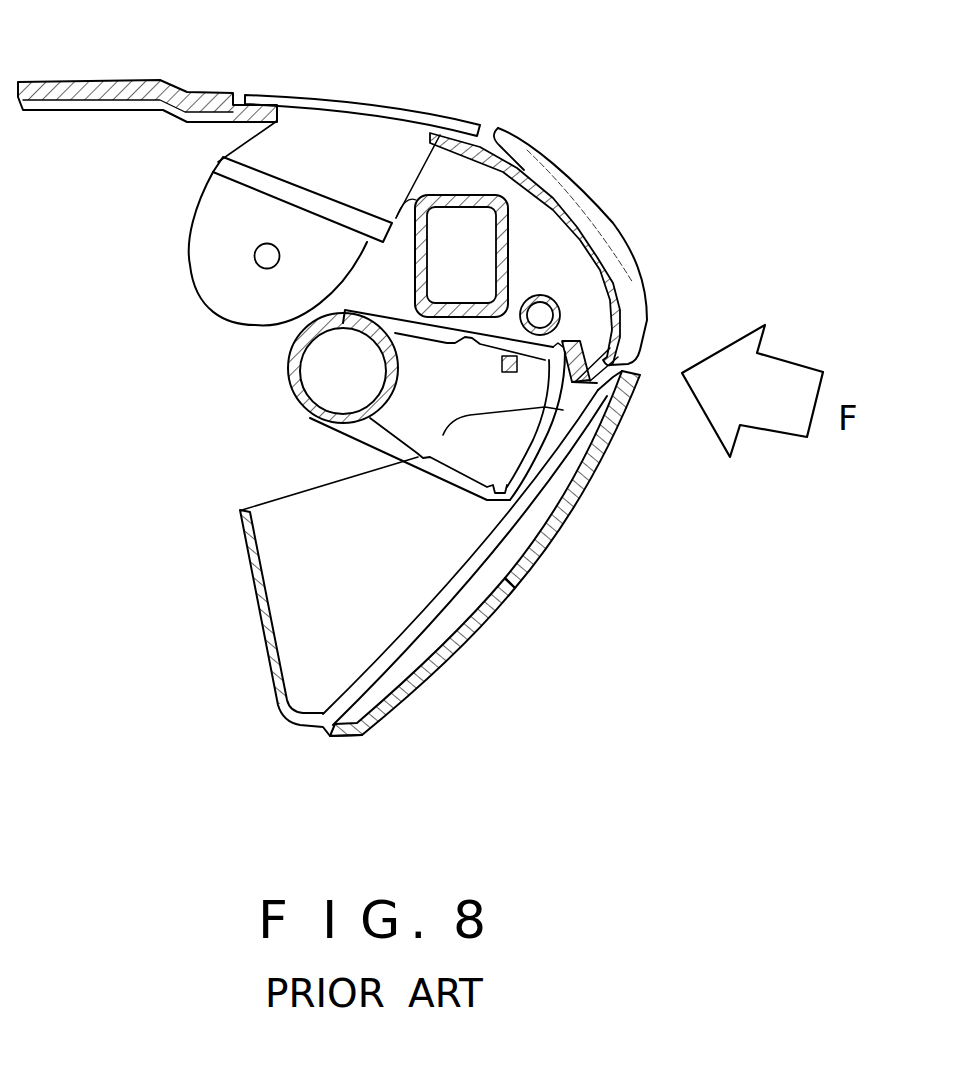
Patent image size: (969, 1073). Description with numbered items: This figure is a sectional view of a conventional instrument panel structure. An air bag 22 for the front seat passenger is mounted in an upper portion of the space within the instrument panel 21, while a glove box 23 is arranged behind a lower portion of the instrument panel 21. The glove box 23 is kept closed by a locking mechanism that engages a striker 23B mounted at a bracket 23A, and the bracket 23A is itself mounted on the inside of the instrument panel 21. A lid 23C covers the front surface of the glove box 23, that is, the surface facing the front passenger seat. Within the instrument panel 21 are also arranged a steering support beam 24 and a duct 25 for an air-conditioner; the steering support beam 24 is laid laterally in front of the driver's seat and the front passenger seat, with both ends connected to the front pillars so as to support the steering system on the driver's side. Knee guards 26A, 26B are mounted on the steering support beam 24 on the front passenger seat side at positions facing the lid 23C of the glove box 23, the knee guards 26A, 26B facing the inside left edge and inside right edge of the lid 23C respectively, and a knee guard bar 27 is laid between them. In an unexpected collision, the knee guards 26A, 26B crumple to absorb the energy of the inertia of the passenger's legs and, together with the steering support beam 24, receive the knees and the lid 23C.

The instrument panel 21 is at (560, 170).
The air bag 22 is at (297, 170).
The glove box 23 is at (503, 556).
The bracket 23A is at (567, 338).
The striker 23B is at (605, 448).
The lid 23C is at (457, 653).
The steering support beam 24 is at (289, 370).
The duct 25 is at (410, 172).
The knee guard 26A is at (343, 433).
The knee guard 26B is at (346, 459).
The knee guard bar 27 is at (551, 297).